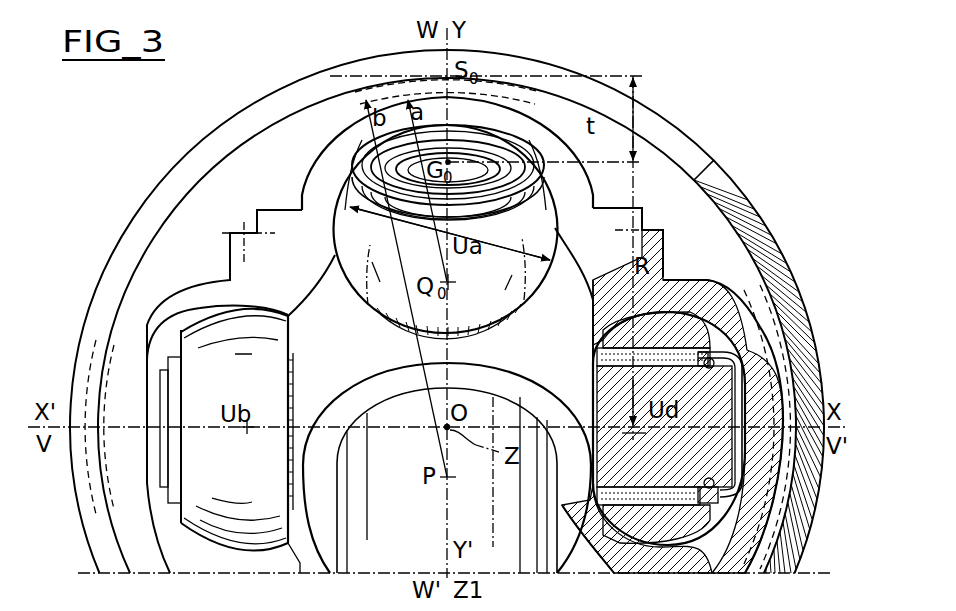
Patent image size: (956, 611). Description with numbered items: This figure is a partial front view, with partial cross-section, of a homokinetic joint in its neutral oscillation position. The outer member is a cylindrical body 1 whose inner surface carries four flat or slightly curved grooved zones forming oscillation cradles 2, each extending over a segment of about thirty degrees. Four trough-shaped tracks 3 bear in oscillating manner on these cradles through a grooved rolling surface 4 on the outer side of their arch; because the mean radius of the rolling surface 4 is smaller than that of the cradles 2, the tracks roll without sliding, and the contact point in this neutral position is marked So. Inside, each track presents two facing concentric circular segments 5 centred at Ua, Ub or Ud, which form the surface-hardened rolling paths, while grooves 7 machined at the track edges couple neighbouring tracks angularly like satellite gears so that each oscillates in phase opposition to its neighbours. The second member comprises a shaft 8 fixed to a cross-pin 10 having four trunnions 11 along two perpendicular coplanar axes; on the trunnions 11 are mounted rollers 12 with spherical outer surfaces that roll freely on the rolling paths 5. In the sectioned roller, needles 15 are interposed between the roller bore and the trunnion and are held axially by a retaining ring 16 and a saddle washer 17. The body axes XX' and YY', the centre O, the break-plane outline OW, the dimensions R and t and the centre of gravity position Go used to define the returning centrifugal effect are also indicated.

The cylindrical body 1 is at (378, 58).
The oscillation cradles 2 is at (340, 130).
The trough-shaped tracks 3 is at (500, 107).
The rolling surface 4 is at (322, 125).
The concentric circular segments 5 is at (338, 190).
The grooves 7 is at (275, 250).
The shaft 8 is at (595, 545).
The cross-pin 10 is at (590, 318).
The trunnions 11 is at (700, 318).
The rollers 12 is at (297, 210).
The needles 15 is at (717, 530).
The retaining ring 16 is at (714, 484).
The saddle washer 17 is at (718, 494).